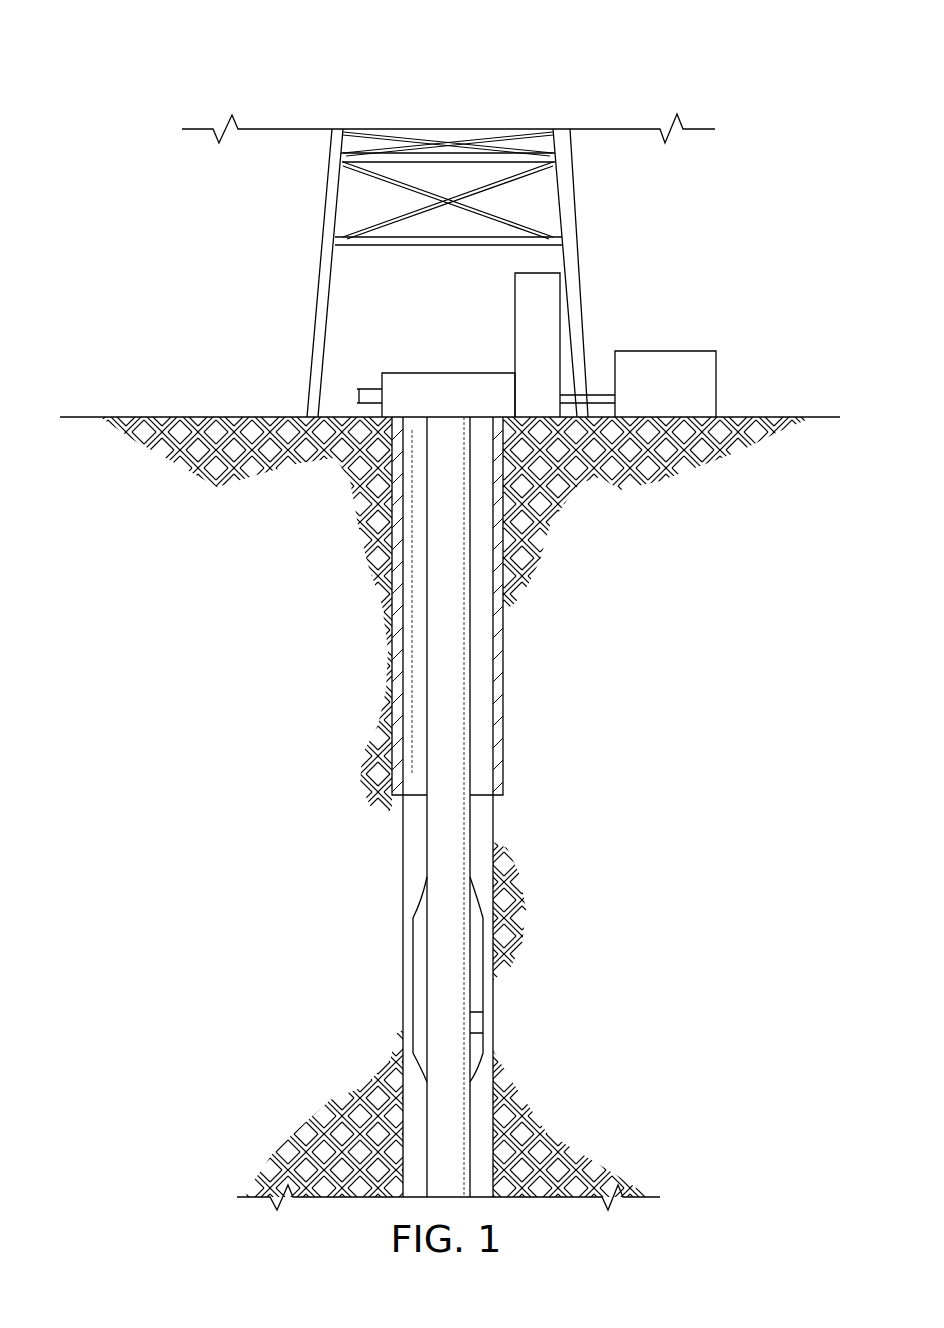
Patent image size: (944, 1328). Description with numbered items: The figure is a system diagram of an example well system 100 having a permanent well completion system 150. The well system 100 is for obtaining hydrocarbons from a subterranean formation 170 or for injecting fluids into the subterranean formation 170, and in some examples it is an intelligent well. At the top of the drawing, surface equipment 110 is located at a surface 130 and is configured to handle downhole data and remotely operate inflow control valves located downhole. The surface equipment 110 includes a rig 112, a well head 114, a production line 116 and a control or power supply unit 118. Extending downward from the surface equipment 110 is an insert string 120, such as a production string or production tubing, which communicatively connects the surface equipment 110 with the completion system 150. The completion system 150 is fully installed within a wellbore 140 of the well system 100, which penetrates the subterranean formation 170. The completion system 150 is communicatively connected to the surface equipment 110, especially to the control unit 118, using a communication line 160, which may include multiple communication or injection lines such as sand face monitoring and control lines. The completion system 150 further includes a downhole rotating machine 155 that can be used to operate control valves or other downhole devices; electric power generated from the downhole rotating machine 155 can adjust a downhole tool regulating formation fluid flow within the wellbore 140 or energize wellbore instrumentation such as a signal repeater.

The well system 100 is at (650, 60).
The surface equipment 110 is at (460, 273).
The rig 112 is at (316, 273).
The well head 114 is at (450, 382).
The production line 116 is at (370, 388).
The control or power supply unit 118 is at (668, 358).
The insert string 120 is at (472, 633).
The surface 130 is at (790, 416).
The wellbore 140 is at (484, 812).
The permanent well completion system 150 is at (420, 980).
The downhole rotating machine 155 is at (480, 1020).
The communication line 160 is at (420, 845).
The subterranean formation 170 is at (662, 600).